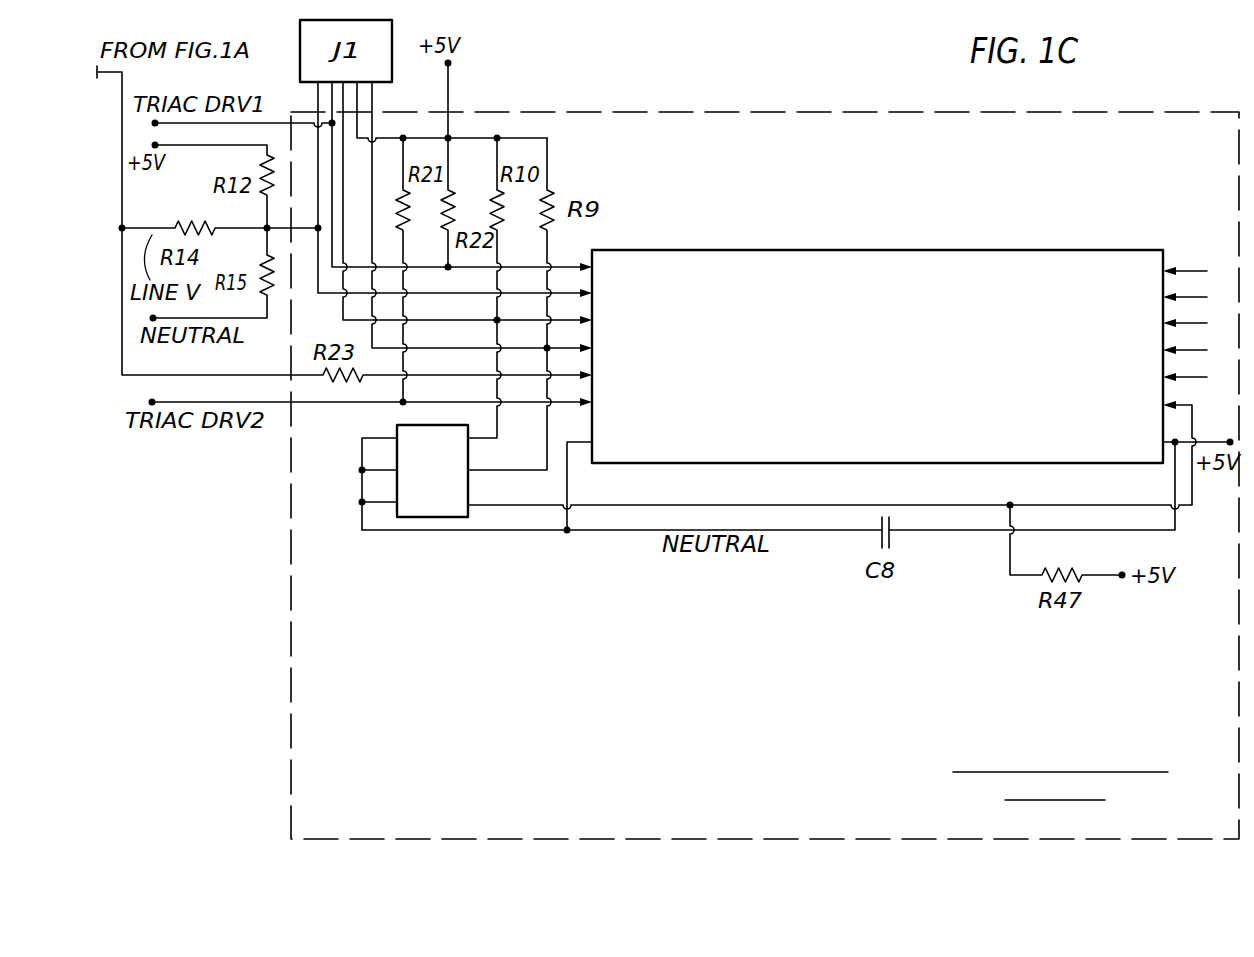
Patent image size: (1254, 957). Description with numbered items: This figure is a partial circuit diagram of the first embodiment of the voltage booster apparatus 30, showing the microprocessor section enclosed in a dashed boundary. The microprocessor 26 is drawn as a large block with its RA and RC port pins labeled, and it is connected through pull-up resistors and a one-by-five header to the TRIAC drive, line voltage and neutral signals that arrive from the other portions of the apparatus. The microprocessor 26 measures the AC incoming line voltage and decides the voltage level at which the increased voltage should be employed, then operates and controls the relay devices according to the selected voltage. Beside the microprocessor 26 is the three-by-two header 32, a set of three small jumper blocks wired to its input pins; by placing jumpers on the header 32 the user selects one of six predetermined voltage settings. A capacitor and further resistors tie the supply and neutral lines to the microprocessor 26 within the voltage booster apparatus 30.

The microprocessor 26 is at (779, 112).
The voltage booster apparatus 30 is at (851, 101).
The 3×2 header 32 is at (397, 428).